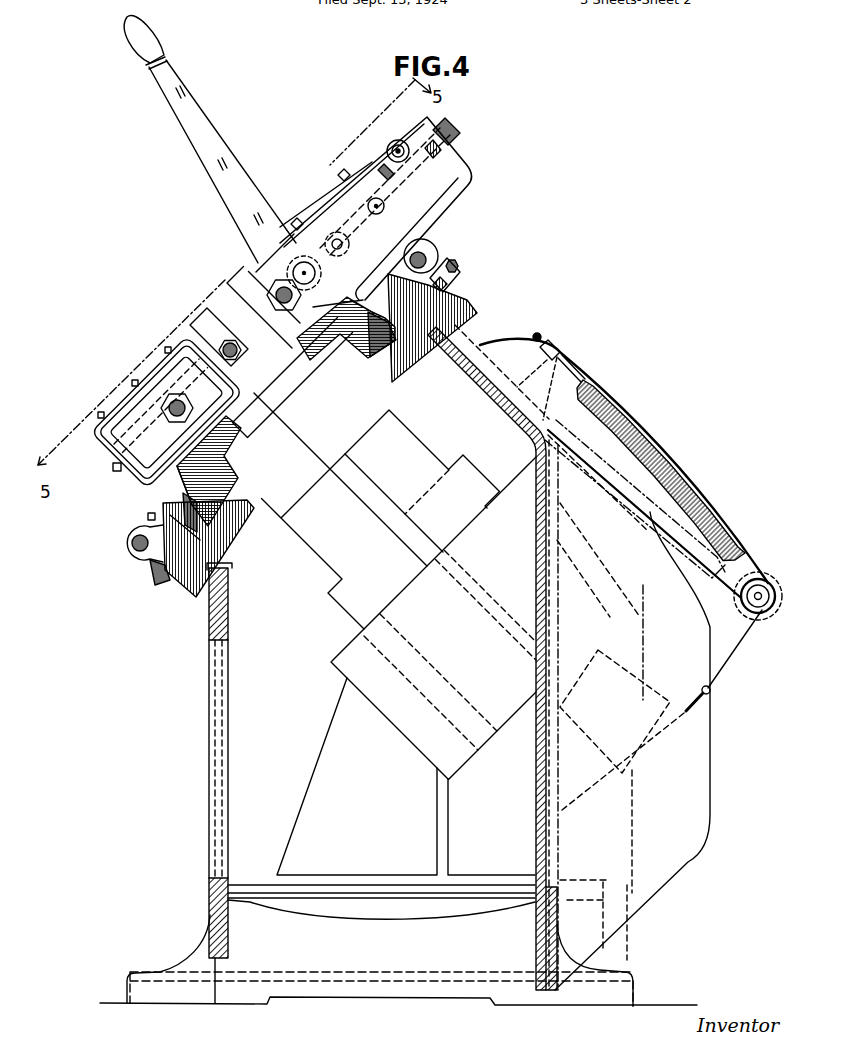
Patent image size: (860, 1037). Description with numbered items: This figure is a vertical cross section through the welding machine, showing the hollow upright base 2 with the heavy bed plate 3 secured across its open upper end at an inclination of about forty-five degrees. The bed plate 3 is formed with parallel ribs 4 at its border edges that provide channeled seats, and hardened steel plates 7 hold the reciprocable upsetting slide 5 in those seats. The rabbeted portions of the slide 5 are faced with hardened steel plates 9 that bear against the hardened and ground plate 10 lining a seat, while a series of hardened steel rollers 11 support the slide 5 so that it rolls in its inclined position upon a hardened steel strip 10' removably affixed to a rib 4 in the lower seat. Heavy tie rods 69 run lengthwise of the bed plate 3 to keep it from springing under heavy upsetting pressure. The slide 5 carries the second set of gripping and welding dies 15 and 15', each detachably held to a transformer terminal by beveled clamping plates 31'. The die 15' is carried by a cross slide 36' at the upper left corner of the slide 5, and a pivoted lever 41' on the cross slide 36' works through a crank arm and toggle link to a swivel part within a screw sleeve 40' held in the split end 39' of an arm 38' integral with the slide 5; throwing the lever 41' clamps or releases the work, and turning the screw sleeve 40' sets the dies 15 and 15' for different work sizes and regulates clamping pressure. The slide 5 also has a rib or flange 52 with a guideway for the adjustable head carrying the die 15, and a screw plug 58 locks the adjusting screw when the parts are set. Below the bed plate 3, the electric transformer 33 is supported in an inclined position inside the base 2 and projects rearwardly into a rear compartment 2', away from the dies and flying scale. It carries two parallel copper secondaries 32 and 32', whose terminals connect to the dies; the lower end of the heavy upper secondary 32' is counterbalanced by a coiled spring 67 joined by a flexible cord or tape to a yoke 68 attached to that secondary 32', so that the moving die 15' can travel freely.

The hollow upright base 2 is at (398, 665).
The rear compartment 2' is at (624, 664).
The bed plate 3 is at (470, 311).
The parallel ribs 4 is at (455, 284).
The reciprocable upsetting slide 5 is at (238, 442).
The hardened steel plates 7 is at (360, 299).
The hardened steel plates 9 is at (368, 357).
The hardened and ground plate 10 is at (289, 422).
The hardened steel strip 10' is at (130, 518).
The hardened steel rollers 11 is at (180, 505).
The gripping and welding die 15 is at (210, 339).
The gripping and welding die 15' is at (219, 334).
The clamping plates 31' is at (243, 291).
The secondary 32 is at (340, 511).
The upper secondary 32' is at (422, 481).
The electric transformer 33 is at (433, 618).
The cross slide 36' is at (255, 276).
The arm 38' is at (393, 212).
The split end 39' is at (454, 133).
The screw sleeve 40' is at (381, 160).
The pivoted lever 41' is at (210, 139).
The rib or flange 52 is at (137, 477).
The screw plug 58 is at (113, 467).
The coiled spring 67 is at (649, 476).
The yoke 68 is at (650, 748).
The tie rods 69 is at (433, 251).